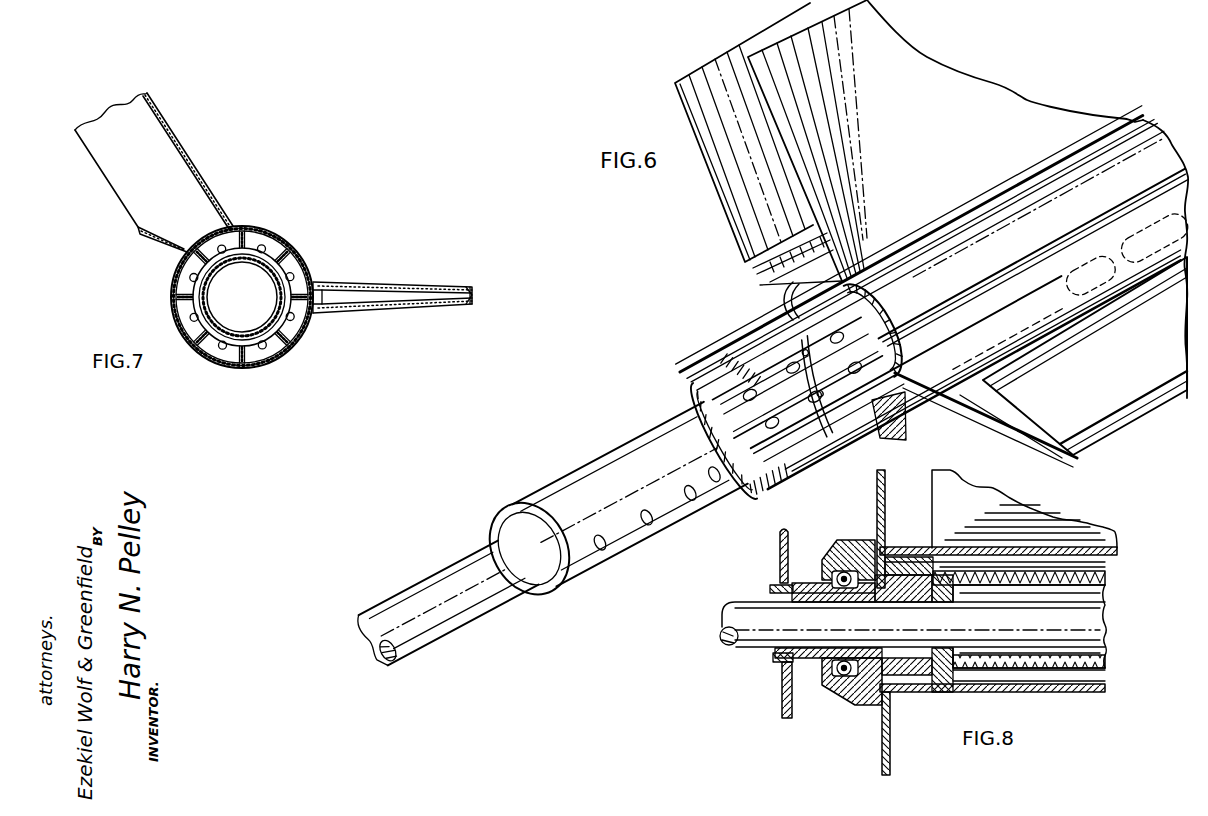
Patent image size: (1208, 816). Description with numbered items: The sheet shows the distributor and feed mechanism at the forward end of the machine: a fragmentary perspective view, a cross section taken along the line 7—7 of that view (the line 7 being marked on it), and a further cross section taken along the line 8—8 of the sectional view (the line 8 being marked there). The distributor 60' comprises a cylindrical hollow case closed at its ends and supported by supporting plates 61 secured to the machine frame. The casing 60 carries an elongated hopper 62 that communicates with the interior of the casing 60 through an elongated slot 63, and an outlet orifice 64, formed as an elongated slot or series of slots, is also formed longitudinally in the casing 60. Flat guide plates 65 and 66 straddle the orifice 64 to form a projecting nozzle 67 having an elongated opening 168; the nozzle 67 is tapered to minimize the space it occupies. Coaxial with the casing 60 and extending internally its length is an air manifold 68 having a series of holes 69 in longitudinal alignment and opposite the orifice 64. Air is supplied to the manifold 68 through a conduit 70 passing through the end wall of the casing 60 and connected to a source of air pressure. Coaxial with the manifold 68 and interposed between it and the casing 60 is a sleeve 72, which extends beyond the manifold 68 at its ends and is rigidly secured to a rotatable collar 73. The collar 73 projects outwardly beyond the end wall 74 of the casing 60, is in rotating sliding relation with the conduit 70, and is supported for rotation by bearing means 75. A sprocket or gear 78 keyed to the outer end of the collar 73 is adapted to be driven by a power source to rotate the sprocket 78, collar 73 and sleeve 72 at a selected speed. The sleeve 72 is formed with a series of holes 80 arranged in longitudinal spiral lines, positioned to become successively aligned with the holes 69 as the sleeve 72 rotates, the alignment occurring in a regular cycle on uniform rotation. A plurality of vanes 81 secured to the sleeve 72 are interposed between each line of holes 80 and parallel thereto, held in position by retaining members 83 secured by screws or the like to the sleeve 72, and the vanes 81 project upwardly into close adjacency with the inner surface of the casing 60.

In FIG. 6, the section line 7— 7 is at (727, 76).
In FIG. 7, the section line 8— 8 is at (256, 400).
In FIG. 6, the casing 60 is at (942, 300).
In FIG. 7, the casing 60 is at (242, 287).
In FIG. 8, the casing 60 is at (1008, 600).
In FIG. 7, the distributor 60' is at (206, 297).
In FIG. 8, the supporting plates 61 is at (885, 482).
In FIG. 6, the hopper 62 is at (937, 138).
In FIG. 7, the hopper 62 is at (172, 140).
In FIG. 8, the hopper 62 is at (980, 522).
In FIG. 6, the slot 63 is at (790, 286).
In FIG. 7, the slot 63 is at (207, 236).
In FIG. 6, the outlet orifice 64 is at (1148, 240).
In FIG. 7, the outlet orifice 64 is at (318, 282).
In FIG. 6, the guide plate 65 is at (1100, 385).
In FIG. 7, the guide plate 65 is at (391, 282).
In FIG. 6, the guide plate 66 is at (1025, 438).
In FIG. 7, the guide plate 66 is at (379, 308).
In FIG. 6, the nozzle 67 is at (983, 429).
In FIG. 7, the nozzle 67 is at (455, 278).
In FIG. 6, the air manifold 68 is at (594, 457).
In FIG. 8, the air manifold 68 is at (1083, 622).
In FIG. 6, the holes 69 is at (601, 540).
In FIG. 7, the holes 69 is at (280, 291).
In FIG. 6, the conduit 70 is at (457, 580).
In FIG. 8, the conduit 70 is at (748, 640).
In FIG. 6, the sleeve 72 is at (680, 390).
In FIG. 8, the sleeve 72 is at (1093, 577).
In FIG. 8, the collar 73 is at (899, 575).
In FIG. 8, the end wall 74 is at (860, 558).
In FIG. 8, the bearing means 75 is at (843, 690).
In FIG. 8, the sprocket or gear 78 is at (778, 550).
In FIG. 6, the holes 80 is at (867, 337).
In FIG. 7, the holes 80 is at (243, 261).
In FIG. 6, the vanes 81 is at (872, 308).
In FIG. 8, the vanes 81 is at (1050, 565).
In FIG. 6, the retaining members 83 is at (838, 400).
In FIG. 7, the elongated opening 168 is at (477, 291).